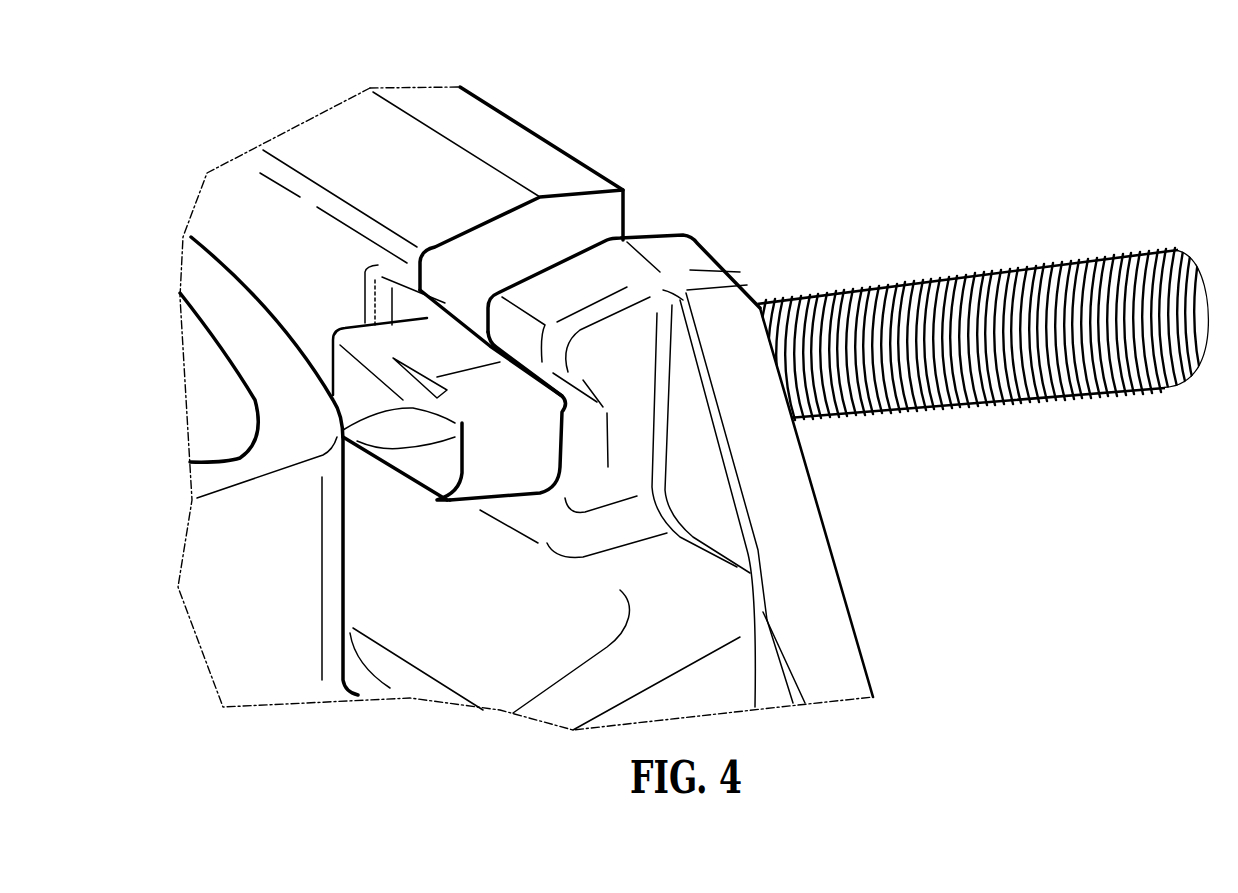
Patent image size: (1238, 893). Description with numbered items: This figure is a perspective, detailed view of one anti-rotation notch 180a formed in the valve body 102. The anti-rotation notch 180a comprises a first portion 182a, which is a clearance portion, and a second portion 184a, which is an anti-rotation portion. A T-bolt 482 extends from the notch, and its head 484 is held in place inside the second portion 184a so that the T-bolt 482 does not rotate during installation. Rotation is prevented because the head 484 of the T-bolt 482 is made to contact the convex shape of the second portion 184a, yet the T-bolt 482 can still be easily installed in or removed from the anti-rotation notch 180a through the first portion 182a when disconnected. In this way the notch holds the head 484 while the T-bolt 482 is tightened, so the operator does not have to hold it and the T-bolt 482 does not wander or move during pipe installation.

The valve body 102 is at (478, 158).
The first portion 182a is at (568, 225).
The anti-rotation notch 180a is at (573, 428).
The second portion 184a is at (555, 540).
The head 484 is at (527, 467).
The T-bolt 482 is at (945, 308).